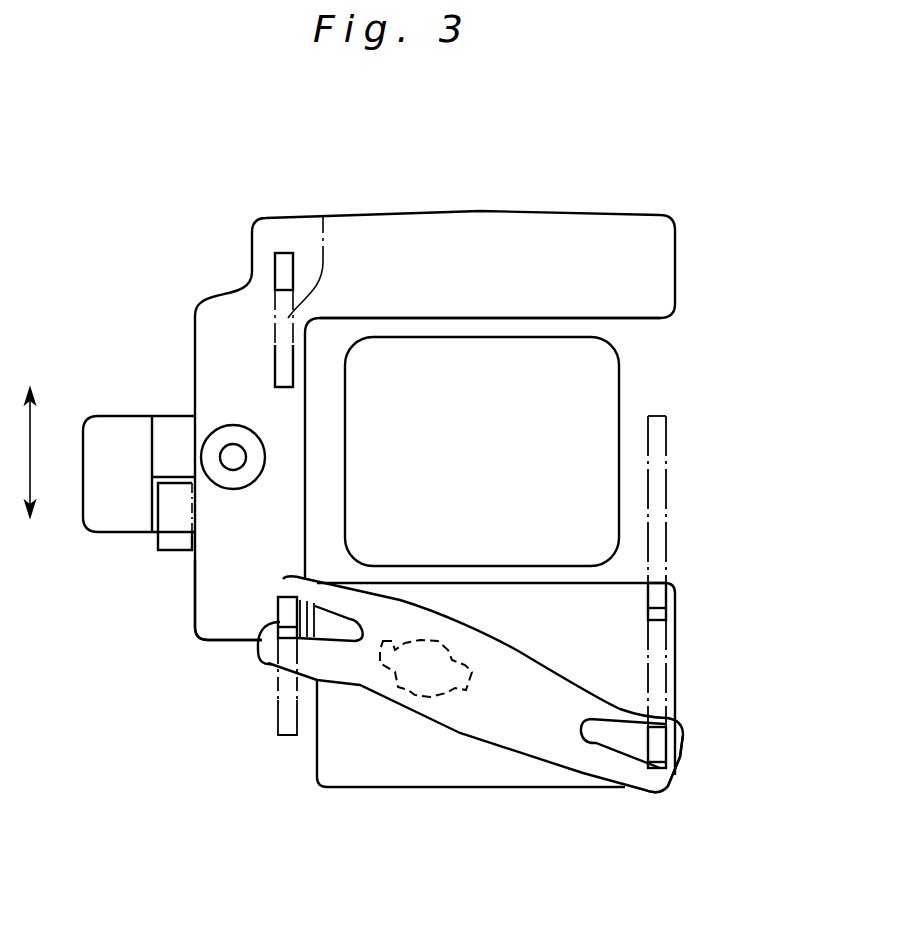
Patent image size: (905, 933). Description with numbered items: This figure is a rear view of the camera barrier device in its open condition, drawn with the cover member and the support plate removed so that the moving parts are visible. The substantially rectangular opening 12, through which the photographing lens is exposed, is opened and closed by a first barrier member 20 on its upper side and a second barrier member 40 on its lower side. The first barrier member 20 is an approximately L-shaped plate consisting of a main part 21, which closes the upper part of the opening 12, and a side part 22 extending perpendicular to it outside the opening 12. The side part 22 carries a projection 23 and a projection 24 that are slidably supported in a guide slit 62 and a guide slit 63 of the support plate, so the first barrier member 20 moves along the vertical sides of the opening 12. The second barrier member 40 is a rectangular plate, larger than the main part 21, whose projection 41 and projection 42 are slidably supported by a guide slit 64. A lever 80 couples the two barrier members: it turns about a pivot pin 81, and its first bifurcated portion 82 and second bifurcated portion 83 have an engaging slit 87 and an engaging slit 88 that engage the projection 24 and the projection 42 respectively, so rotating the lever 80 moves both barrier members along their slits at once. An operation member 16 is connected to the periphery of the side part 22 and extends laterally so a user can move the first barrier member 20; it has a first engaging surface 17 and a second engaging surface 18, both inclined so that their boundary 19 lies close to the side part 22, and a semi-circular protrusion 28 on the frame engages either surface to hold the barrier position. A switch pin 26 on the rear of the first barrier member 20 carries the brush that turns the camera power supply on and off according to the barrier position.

The opening 12 is at (590, 378).
The operation member 16 is at (100, 432).
The first engaging surface 17 is at (150, 492).
The second engaging surface 18 is at (180, 435).
The boundary 19 is at (168, 505).
The first barrier member 20 is at (447, 395).
The main part 21 is at (535, 238).
The side part 22 is at (205, 585).
The projection 23 is at (283, 262).
The projection 24 is at (280, 606).
The switch pin 26 is at (233, 425).
The semi-circular protrusion 28 is at (165, 540).
The second barrier member 40 is at (678, 672).
The projection 41 is at (658, 595).
The projection 42 is at (665, 750).
The guide slit 62 is at (323, 214).
The guide slit 63 is at (282, 723).
The guide slit 64 is at (660, 432).
The lever 80 is at (458, 733).
The pivot pin 81 is at (410, 690).
The first bifurcated portion 82 is at (265, 656).
The second bifurcated portion 83 is at (642, 790).
The engaging slit 87 is at (345, 620).
The engaging slit 88 is at (615, 735).